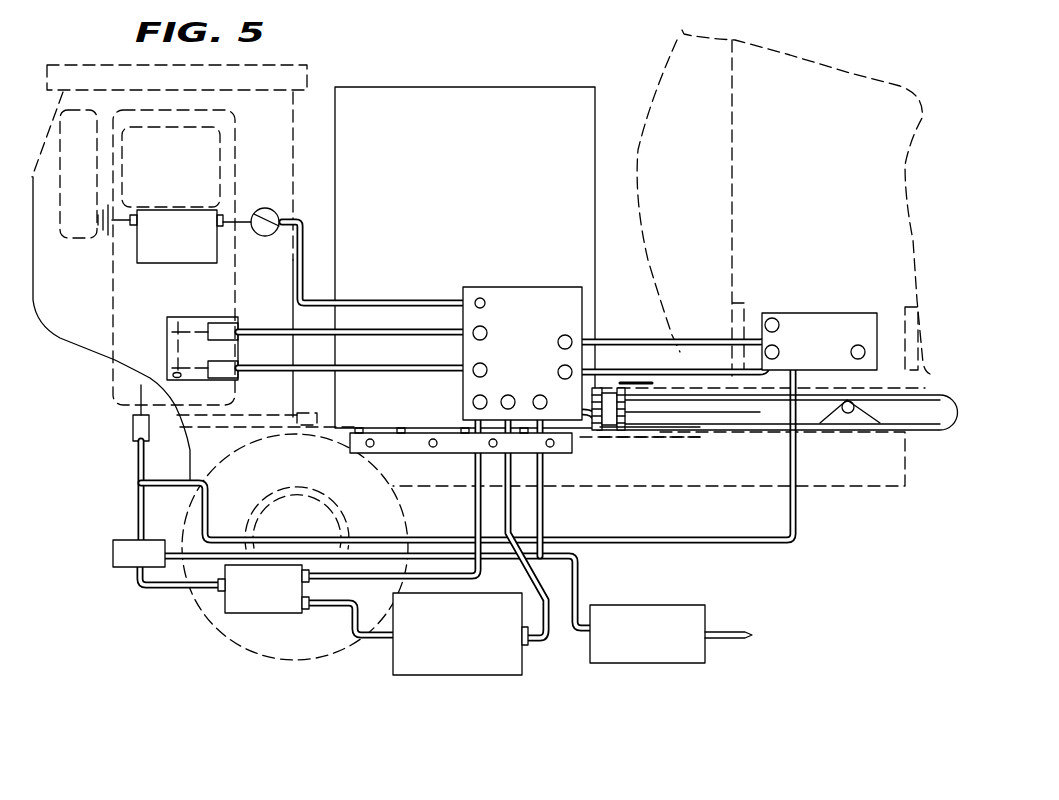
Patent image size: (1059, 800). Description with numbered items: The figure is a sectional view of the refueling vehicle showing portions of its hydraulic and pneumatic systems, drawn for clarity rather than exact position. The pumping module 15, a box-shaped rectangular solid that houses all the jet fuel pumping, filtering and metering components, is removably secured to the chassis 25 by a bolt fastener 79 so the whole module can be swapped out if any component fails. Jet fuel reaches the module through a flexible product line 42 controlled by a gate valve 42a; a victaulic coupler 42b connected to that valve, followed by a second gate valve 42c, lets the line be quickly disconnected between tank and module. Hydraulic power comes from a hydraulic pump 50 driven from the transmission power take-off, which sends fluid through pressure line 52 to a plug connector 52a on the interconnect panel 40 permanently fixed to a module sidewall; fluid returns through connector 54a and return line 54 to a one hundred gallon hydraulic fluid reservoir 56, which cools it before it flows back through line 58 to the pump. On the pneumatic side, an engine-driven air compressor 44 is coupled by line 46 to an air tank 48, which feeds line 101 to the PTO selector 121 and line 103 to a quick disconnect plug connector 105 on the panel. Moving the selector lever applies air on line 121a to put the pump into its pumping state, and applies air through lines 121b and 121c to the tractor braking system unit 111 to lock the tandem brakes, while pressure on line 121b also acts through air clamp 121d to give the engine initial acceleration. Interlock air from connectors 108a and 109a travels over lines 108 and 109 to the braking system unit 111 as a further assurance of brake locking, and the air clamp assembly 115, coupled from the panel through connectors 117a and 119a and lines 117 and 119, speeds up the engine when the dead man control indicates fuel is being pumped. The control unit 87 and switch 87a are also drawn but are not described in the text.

The pumping module 15 is at (478, 87).
The chassis 25 is at (872, 478).
The interconnect panel 40 is at (472, 287).
The product line 42 is at (910, 432).
The gate valve 42a is at (662, 425).
The victaulic coupler 42b is at (604, 393).
The second gate valve 42c is at (625, 435).
The air compressor 44 is at (857, 636).
The line 46 is at (732, 632).
The air tank 48 is at (683, 602).
The hydraulic pump 50 is at (263, 615).
The pressure line 52 is at (472, 493).
The plug connector 52a is at (472, 405).
The return line 54 is at (503, 510).
The plug connector 54a is at (516, 390).
The hydraulic fluid reservoir 56 is at (512, 676).
The line 58 is at (375, 642).
The bolt fastener 79 is at (405, 448).
The control unit 87 is at (173, 210).
The control switch 87a is at (262, 208).
The line 101 is at (580, 577).
The line 103 is at (545, 504).
The quick disconnect plug connector 105 is at (578, 425).
The line 108 is at (600, 335).
The connector 108a is at (563, 336).
The line 109 is at (665, 345).
The connector 109a is at (560, 368).
The tractor braking system unit 111 is at (806, 313).
The air clamp assembly 115 is at (198, 317).
The line 117 is at (348, 331).
The connector 117a is at (492, 328).
The line 119 is at (357, 368).
The connector 119a is at (470, 372).
The PTO selector 121 is at (113, 545).
The line 121a is at (146, 592).
The line 121b is at (137, 460).
The line 121c is at (204, 512).
The air clamp 121d is at (130, 425).